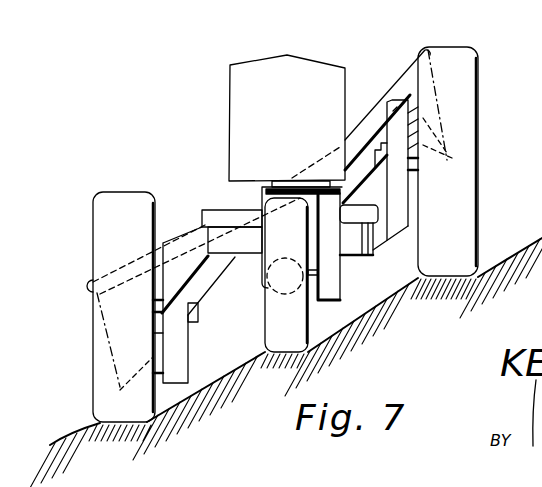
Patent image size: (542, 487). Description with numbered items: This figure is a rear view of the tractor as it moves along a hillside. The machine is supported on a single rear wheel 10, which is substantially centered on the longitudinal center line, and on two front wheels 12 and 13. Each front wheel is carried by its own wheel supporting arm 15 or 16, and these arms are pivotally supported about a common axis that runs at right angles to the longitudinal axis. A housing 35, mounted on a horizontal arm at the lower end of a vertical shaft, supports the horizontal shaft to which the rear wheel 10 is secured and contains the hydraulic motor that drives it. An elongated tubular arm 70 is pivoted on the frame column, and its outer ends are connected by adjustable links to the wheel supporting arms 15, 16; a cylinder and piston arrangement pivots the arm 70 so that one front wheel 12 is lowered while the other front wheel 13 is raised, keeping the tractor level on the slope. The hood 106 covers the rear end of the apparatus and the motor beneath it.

The rear wheel 10 is at (278, 311).
The front wheel 12 is at (117, 208).
The front wheel 13 is at (464, 163).
The wheel supporting arm 15 is at (181, 248).
The wheel supporting arm 16 is at (380, 175).
The housing 35 is at (336, 273).
The elongated tubular arm 70 is at (400, 82).
The hood 106 is at (253, 80).